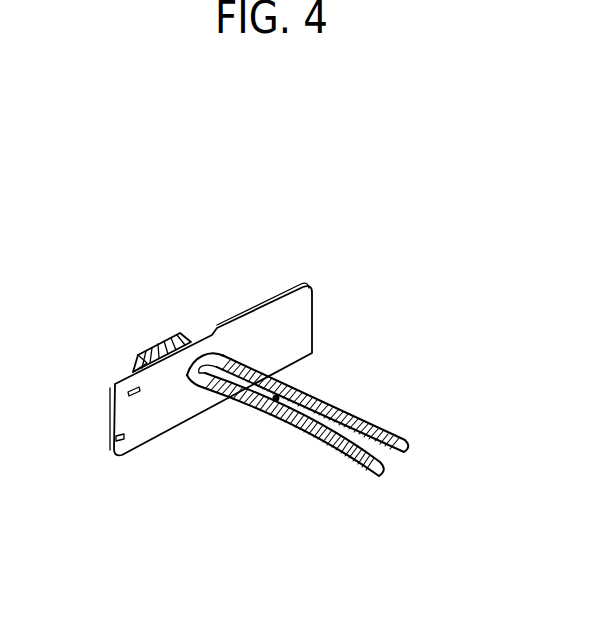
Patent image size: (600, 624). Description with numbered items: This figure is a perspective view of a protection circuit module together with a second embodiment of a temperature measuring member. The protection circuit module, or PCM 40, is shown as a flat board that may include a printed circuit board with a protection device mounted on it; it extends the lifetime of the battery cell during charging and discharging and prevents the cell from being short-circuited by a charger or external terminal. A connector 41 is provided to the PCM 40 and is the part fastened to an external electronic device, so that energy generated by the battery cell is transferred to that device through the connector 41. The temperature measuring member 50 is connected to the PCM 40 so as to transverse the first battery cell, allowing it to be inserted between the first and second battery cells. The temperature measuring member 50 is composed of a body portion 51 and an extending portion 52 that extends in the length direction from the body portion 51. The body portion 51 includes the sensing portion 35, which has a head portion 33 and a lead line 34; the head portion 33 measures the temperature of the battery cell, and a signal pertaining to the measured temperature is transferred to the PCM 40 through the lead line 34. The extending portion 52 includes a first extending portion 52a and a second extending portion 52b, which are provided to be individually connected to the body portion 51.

The head portion 33 is at (270, 402).
The lead line 34 is at (213, 389).
The sensing portion 35 is at (256, 517).
The PCM 40 is at (241, 303).
The connector 41 is at (136, 350).
The temperature measuring member 50 is at (365, 329).
The body portion 51 is at (275, 355).
The extending portion 52 is at (328, 377).
The first extending portion 52a is at (302, 393).
The second extending portion 52b is at (378, 437).